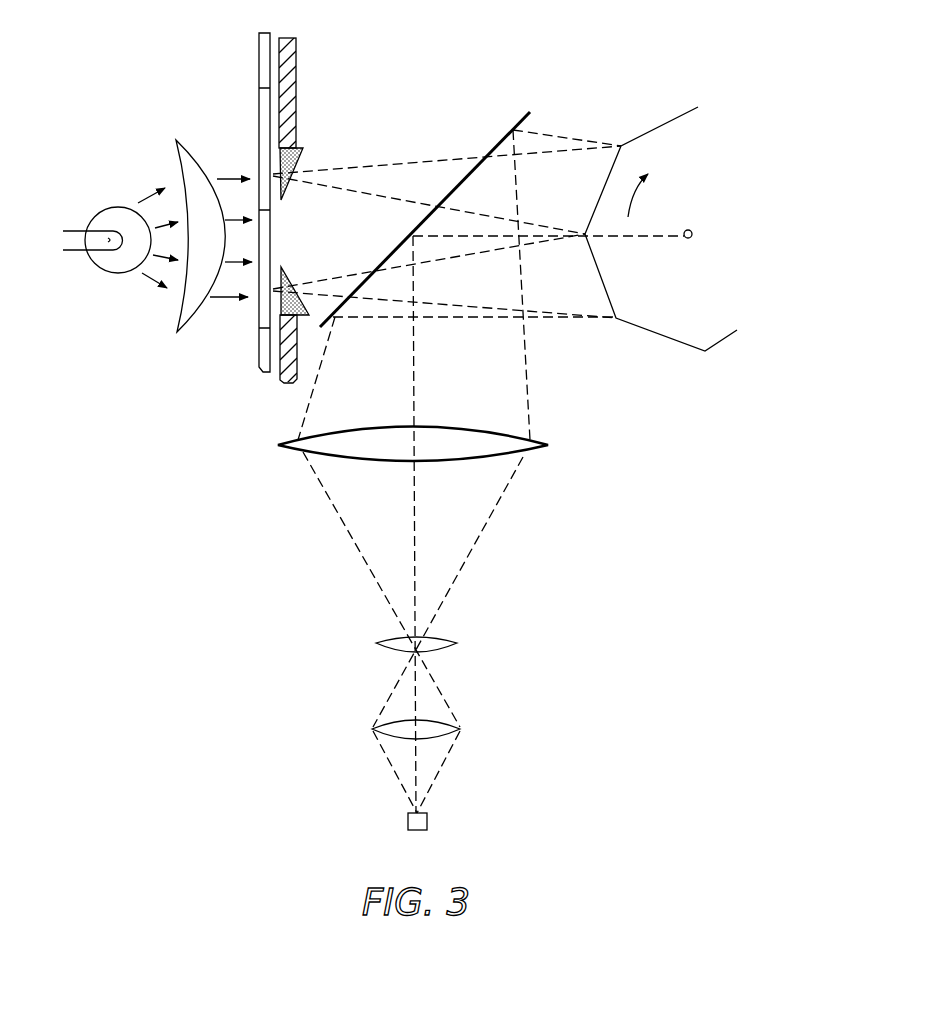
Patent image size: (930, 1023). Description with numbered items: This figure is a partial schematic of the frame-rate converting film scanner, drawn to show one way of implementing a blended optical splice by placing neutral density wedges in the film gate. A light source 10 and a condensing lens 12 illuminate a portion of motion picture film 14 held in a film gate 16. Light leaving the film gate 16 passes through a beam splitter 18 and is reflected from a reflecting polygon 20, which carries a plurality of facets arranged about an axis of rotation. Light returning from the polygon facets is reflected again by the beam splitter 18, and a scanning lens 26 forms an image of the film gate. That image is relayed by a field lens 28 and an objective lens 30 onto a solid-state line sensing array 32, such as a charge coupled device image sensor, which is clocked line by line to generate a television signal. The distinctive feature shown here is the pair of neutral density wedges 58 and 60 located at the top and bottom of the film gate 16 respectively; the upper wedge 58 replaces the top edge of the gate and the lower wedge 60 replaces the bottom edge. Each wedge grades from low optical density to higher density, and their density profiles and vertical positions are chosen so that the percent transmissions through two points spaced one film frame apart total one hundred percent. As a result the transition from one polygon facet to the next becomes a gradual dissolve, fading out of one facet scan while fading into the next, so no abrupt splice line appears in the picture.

The light source 10 is at (104, 210).
The condensing lens 12 is at (192, 157).
The motion picture film 14 is at (257, 55).
The film gate 16 is at (295, 75).
The beam splitter 18 is at (500, 140).
The reflecting polygon 20 is at (718, 163).
The scanning lens 26 is at (538, 440).
The field lens 28 is at (453, 633).
The objective lens 30 is at (453, 722).
The line sensing array 32 is at (428, 820).
The neutral density wedge 58 is at (303, 152).
The neutral density wedge 60 is at (293, 272).